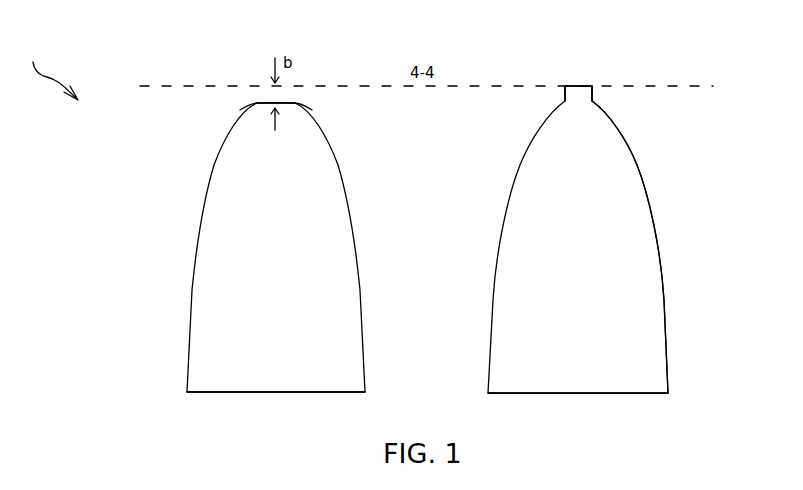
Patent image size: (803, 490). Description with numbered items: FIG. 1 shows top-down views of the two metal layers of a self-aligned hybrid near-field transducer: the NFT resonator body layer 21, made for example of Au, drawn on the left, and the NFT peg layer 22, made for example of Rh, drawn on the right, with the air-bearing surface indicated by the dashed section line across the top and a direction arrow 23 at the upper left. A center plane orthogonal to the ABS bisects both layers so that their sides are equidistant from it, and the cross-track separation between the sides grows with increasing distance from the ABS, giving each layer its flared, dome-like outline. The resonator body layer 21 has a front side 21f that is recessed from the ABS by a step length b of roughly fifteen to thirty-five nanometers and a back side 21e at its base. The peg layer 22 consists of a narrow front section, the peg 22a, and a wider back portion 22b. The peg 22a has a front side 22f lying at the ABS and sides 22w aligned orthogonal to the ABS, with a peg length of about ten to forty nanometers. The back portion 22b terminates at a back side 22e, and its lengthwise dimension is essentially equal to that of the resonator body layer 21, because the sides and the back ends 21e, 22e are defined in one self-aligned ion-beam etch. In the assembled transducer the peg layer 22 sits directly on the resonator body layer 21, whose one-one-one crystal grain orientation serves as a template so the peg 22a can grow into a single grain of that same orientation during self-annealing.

The NFT resonator body layer 21 is at (328, 243).
The resonator body layer front side 21f is at (268, 93).
The back side of resonator body layer 21e is at (214, 393).
The NFT peg layer 22 is at (628, 184).
The front side of peg 22f is at (578, 86).
The sides of peg 22w is at (565, 97).
The peg 22a is at (592, 96).
The back portion of peg layer 22b is at (632, 282).
The back side of peg layer 22e is at (622, 393).
The direction arrow 23 is at (50, 71).